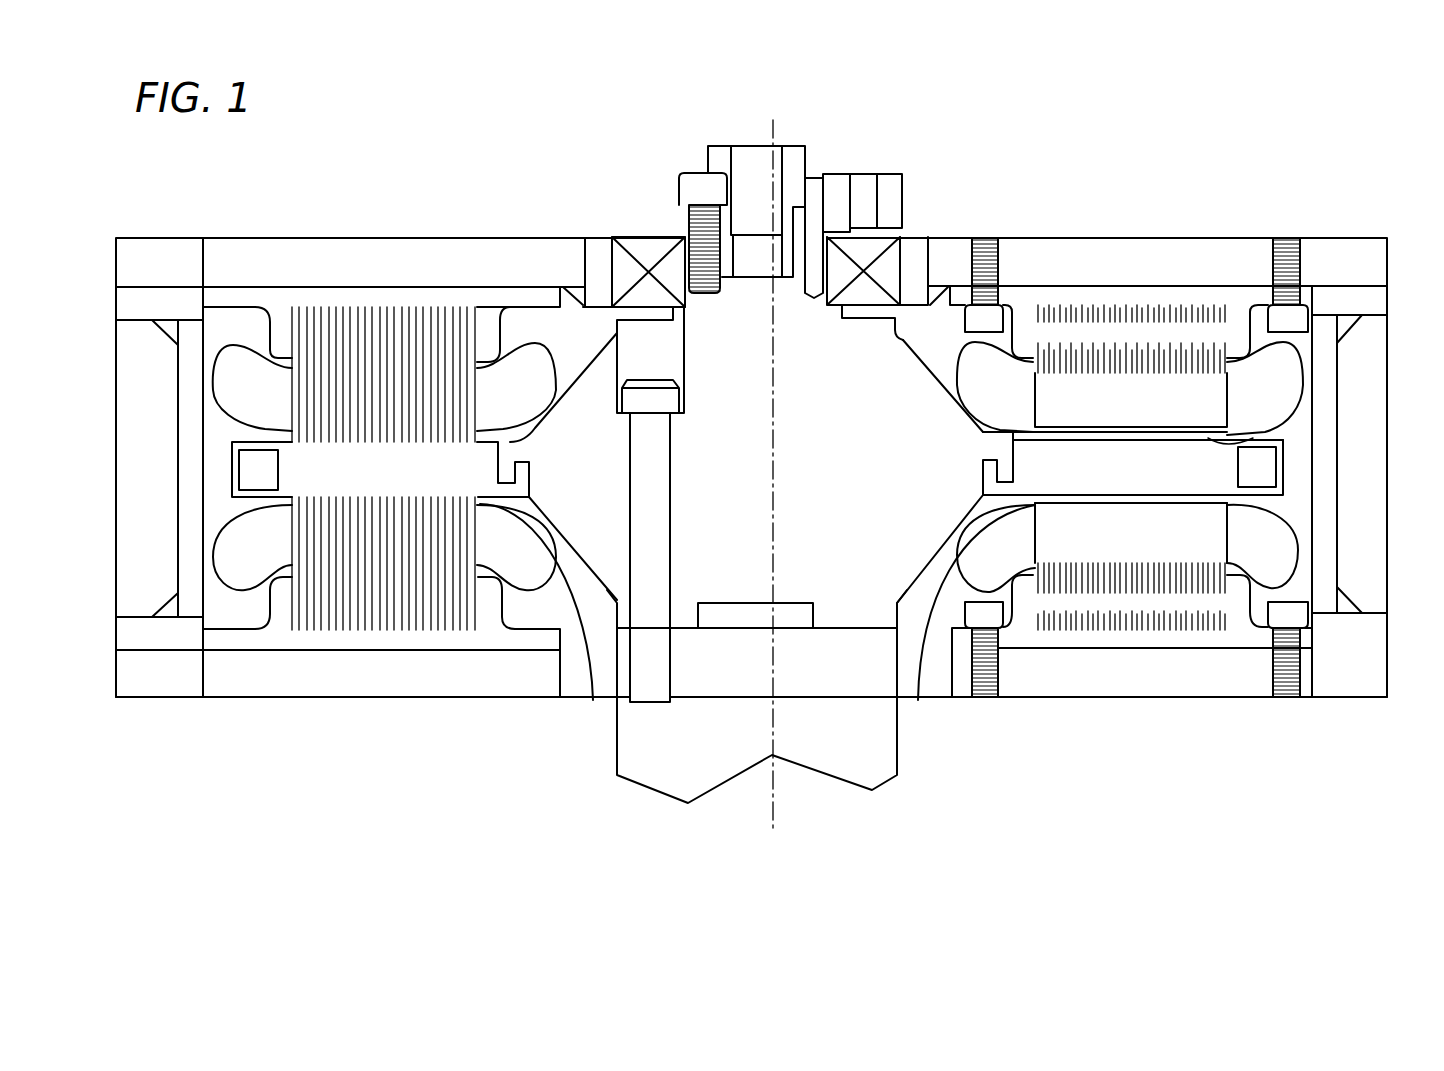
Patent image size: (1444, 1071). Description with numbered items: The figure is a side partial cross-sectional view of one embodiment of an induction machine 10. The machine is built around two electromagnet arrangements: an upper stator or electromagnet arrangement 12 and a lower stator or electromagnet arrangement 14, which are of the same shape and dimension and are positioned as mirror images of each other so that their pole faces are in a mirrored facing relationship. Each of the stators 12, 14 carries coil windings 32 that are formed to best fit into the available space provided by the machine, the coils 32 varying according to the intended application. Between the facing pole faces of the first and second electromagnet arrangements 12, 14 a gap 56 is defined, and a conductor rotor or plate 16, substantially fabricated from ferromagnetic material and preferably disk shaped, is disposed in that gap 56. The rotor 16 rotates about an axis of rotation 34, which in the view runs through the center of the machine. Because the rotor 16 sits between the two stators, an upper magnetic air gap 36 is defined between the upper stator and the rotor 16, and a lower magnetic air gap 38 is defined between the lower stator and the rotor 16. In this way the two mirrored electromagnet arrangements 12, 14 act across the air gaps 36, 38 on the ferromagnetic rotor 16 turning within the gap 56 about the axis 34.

The induction machine 10 is at (1247, 163).
The upper stator or electromagnet arrangement 12 is at (1025, 352).
The lower stator or electromagnet arrangement 14 is at (1023, 588).
The conductor rotor or plate 16 is at (1218, 470).
The coil windings 32 is at (593, 700).
The axis of rotation 34 is at (775, 818).
The upper magnetic air gap 36 is at (1230, 432).
The lower magnetic air gap 38 is at (1207, 503).
The gap 56 is at (1148, 497).